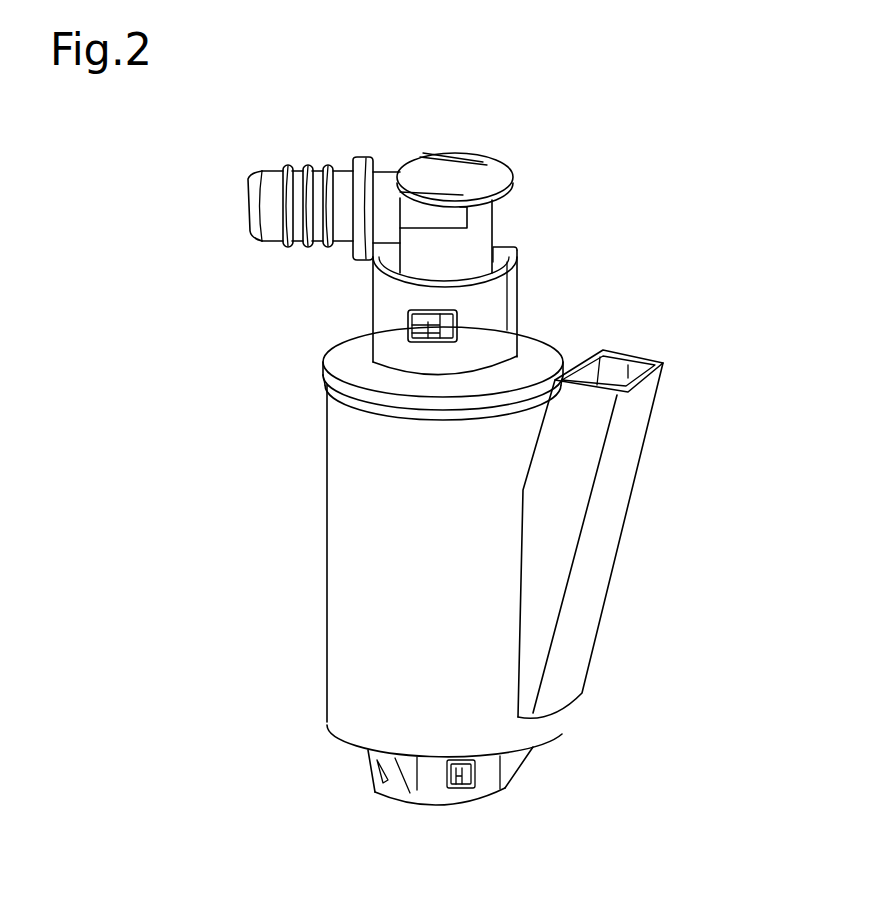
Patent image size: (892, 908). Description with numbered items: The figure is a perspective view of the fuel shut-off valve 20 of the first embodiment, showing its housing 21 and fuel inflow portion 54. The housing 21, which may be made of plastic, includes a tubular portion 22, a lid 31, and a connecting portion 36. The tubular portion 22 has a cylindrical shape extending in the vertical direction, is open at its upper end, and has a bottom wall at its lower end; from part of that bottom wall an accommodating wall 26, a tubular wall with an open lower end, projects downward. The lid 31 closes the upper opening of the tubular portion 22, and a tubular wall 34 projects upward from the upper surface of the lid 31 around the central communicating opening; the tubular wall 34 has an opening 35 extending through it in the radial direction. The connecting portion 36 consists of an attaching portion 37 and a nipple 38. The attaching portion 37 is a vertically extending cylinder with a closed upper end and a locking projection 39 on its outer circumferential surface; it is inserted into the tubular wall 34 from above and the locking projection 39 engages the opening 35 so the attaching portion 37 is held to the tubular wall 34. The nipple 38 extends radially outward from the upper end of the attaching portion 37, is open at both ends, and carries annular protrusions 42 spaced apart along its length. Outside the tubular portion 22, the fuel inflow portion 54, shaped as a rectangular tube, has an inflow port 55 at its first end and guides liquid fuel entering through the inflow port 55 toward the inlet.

The fuel shut-off valve 20 is at (202, 377).
The housing 21 is at (386, 538).
The tubular portion 22 is at (335, 513).
The accommodating wall 26 is at (488, 785).
The lid 31 is at (350, 348).
The tubular wall 34 is at (382, 298).
The opening 35 is at (440, 312).
The connecting portion 36 is at (488, 213).
The attaching portion 37 is at (487, 225).
The nipple 38 is at (252, 202).
The locking projection 39 is at (430, 318).
The annular protrusions 42 is at (327, 164).
The fuel inflow portion 54 is at (615, 505).
The inflow port 55 is at (645, 355).